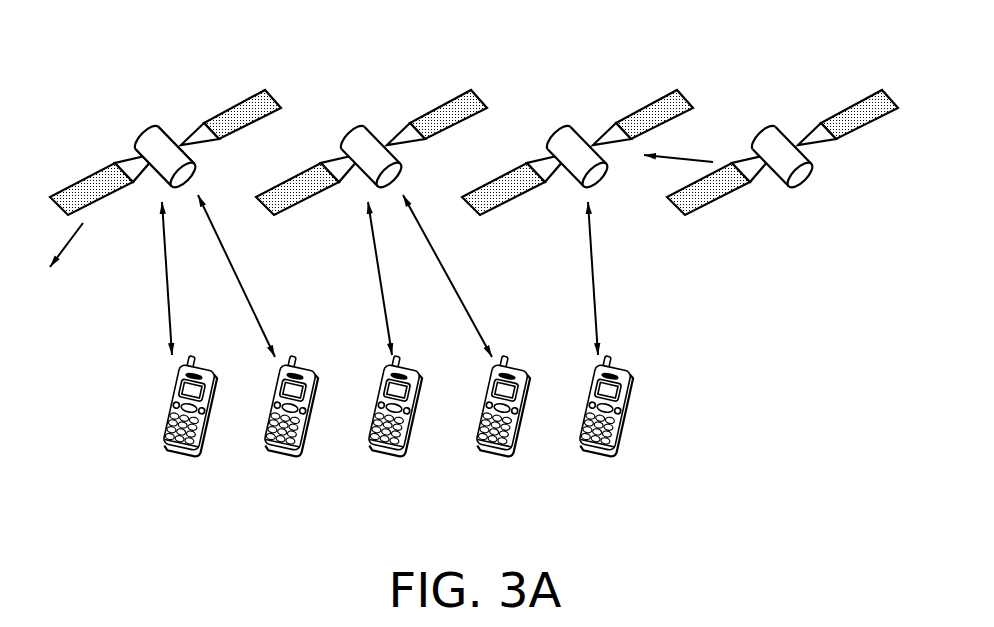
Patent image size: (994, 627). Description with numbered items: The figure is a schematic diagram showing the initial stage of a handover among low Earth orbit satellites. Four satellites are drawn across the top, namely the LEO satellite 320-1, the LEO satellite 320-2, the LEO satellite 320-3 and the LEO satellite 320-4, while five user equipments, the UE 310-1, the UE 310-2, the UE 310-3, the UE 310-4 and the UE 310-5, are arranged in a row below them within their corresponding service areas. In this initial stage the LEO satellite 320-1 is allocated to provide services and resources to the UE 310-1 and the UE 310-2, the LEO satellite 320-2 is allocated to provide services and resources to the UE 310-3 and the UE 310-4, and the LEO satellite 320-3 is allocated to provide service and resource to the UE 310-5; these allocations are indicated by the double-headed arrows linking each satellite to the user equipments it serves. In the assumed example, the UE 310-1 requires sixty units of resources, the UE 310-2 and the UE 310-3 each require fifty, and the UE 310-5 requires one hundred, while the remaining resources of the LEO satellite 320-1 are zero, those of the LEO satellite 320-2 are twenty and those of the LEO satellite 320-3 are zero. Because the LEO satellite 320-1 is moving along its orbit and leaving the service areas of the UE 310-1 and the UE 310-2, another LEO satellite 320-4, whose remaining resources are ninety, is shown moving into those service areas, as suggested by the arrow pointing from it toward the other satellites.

The LEO satellite 320-1 is at (147, 127).
The LEO satellite 320-2 is at (371, 135).
The LEO satellite 320-3 is at (577, 135).
The LEO satellite 320-4 is at (782, 135).
The UE 310-1 is at (180, 449).
The UE 310-2 is at (283, 449).
The UE 310-3 is at (387, 449).
The UE 310-4 is at (495, 449).
The UE 310-5 is at (598, 449).